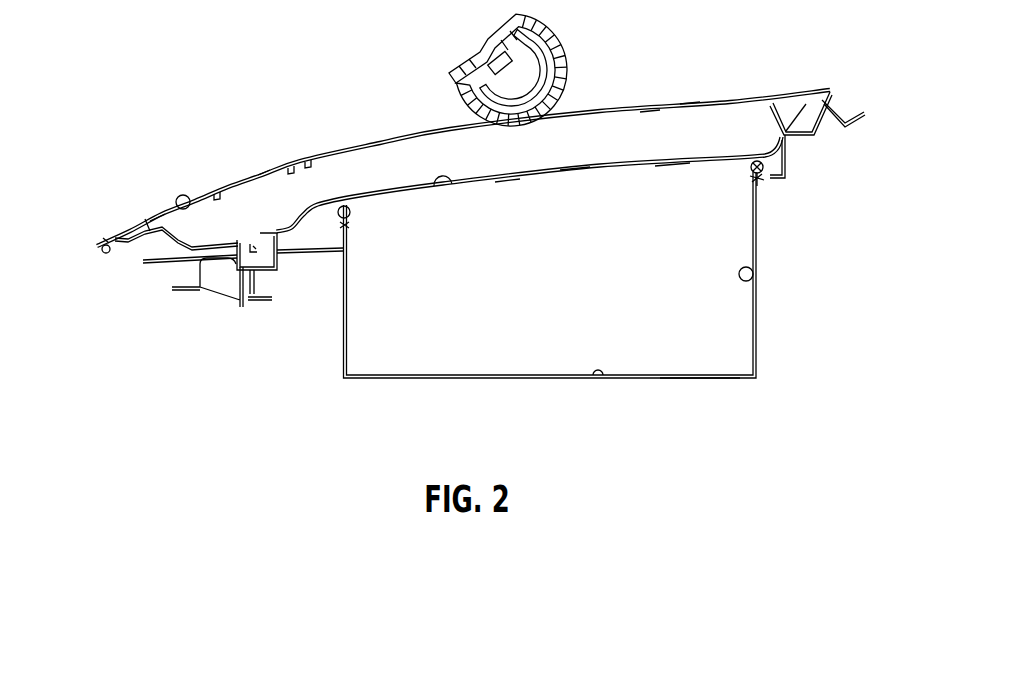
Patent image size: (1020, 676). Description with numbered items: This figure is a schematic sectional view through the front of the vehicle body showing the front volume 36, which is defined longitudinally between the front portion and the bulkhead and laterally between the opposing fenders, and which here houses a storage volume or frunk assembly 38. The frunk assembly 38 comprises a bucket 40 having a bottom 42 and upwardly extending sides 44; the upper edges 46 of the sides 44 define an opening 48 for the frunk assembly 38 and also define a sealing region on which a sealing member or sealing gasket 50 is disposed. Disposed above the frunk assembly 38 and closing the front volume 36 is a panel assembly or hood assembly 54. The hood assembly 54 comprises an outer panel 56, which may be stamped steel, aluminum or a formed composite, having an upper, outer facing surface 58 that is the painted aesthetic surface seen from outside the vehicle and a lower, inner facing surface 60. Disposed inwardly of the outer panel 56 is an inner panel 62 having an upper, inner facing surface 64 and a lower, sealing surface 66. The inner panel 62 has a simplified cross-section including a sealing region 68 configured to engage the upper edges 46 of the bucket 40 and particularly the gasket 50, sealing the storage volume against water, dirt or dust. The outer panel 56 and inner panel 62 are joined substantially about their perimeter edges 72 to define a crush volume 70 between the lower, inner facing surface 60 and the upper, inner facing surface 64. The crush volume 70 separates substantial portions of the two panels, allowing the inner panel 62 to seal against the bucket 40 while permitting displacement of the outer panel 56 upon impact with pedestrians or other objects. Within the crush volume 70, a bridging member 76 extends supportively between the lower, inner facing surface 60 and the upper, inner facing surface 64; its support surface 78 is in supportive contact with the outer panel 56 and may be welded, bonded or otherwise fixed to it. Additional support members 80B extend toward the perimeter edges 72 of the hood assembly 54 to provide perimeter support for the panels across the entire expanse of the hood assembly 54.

The front volume 36 is at (288, 350).
The frunk assembly 38 is at (535, 291).
The bucket 40 is at (699, 388).
The bottom 42 is at (598, 378).
The sides 44 is at (756, 280).
The upper edges 46 is at (762, 183).
The opening 48 is at (571, 200).
The sealing gasket 50 is at (762, 170).
The hood assembly 54 is at (332, 138).
The outer panel 56 is at (152, 196).
The upper, outer facing surface 58 is at (263, 167).
The lower, inner facing surface 60 is at (185, 194).
The inner panel 62 is at (403, 198).
The upper, inner facing surface 64 is at (452, 188).
The lower, sealing surface 66 is at (500, 185).
The sealing region 68 is at (665, 172).
The crush volume 70 is at (656, 151).
The perimeter edges 72 is at (100, 243).
The bridging member 76 is at (783, 103).
The support surface 78 is at (688, 100).
The additional support members 80B is at (153, 222).